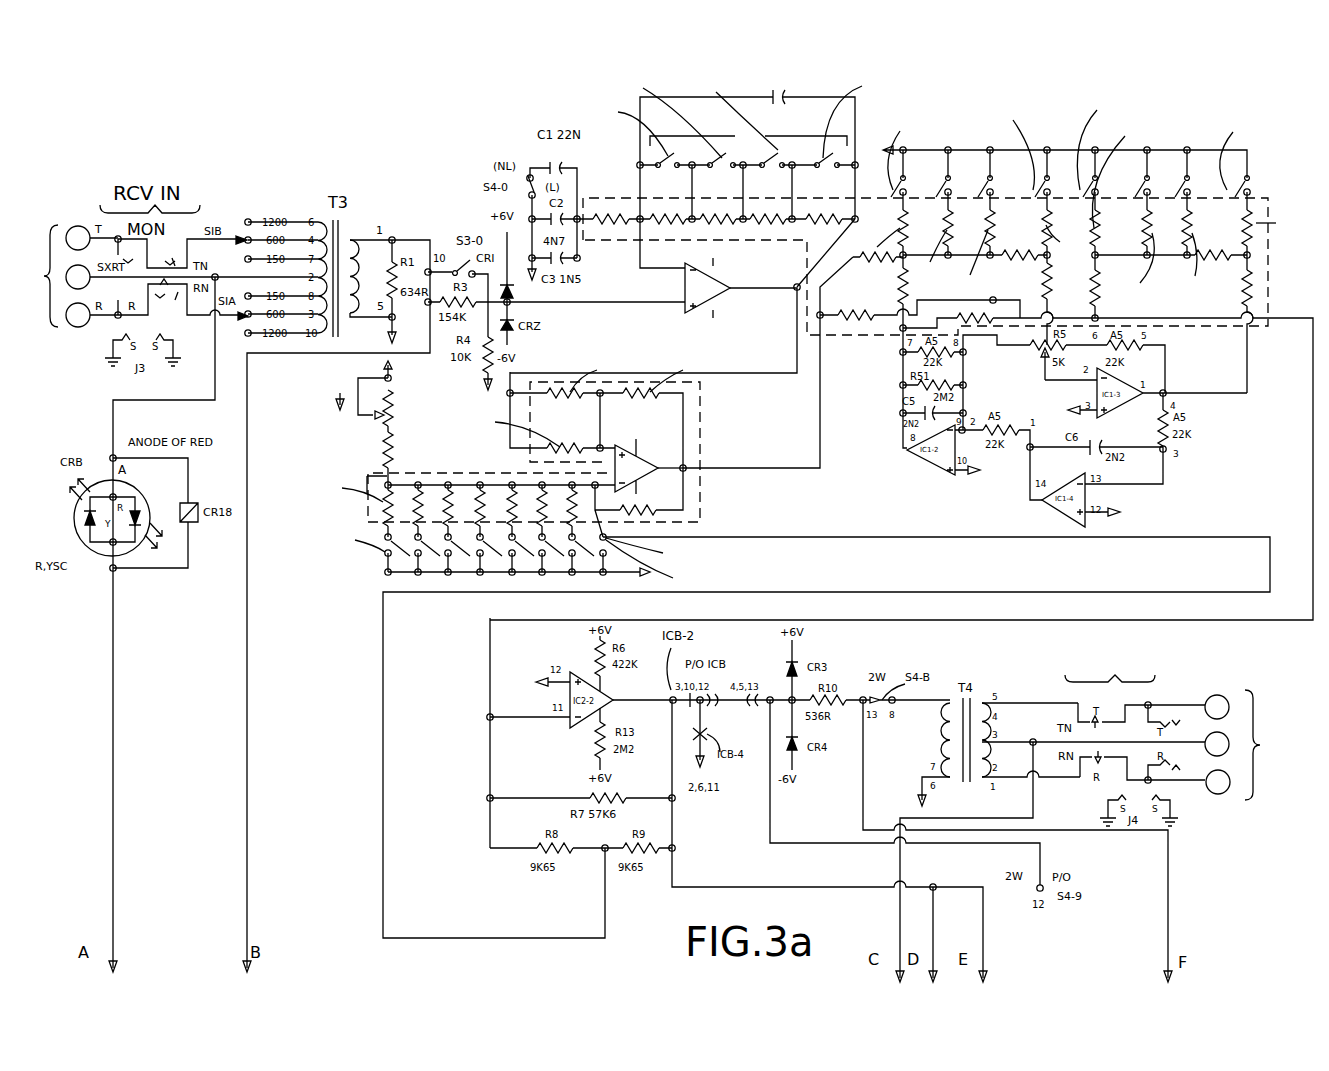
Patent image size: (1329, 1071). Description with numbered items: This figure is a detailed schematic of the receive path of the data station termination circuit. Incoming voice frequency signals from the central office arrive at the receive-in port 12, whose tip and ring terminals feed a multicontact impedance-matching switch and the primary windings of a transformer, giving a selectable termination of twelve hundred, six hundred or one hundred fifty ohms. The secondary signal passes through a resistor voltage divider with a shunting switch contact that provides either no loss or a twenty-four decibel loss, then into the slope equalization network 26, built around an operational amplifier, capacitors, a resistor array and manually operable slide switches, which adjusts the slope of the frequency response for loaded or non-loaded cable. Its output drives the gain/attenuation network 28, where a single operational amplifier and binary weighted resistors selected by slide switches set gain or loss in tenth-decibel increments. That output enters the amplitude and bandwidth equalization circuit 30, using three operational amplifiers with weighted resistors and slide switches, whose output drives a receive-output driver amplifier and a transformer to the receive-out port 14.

The receive-in port 12 is at (44, 225).
The receive-out port 14 is at (1236, 690).
The slope equalization network 26 is at (636, 329).
The gain/attenuation network 28 is at (479, 461).
The amplitude and bandwidth equalization circuit 30 is at (1067, 126).